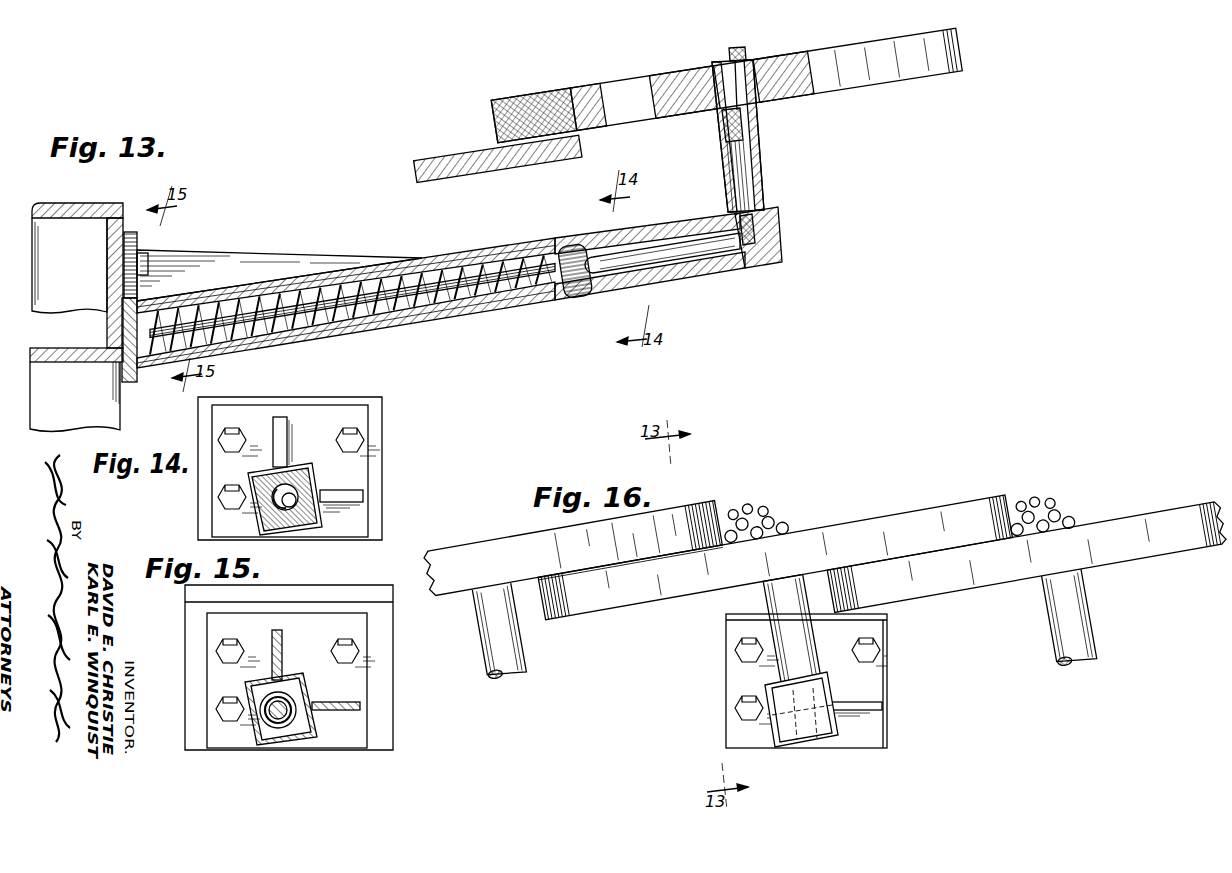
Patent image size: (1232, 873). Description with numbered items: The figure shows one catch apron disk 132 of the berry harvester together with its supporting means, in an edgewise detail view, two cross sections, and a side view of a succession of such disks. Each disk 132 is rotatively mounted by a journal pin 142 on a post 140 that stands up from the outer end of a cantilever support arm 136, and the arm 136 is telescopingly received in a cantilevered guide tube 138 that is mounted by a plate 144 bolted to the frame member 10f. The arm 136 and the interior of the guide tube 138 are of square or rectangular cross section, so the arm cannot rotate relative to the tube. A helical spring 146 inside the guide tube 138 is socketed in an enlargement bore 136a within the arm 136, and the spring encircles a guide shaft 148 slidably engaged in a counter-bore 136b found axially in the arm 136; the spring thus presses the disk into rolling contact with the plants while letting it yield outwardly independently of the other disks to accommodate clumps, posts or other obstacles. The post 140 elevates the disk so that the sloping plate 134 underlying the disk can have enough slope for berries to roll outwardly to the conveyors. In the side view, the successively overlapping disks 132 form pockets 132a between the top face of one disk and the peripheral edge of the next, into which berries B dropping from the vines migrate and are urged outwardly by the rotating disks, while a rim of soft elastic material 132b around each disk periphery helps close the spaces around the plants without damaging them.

In FIG. 13, the frame member 10f is at (110, 203).
In FIG. 14, the frame member 10f is at (382, 440).
In FIG. 15, the frame member 10f is at (376, 585).
In FIG. 13, the disk 132 is at (883, 77).
In FIG. 16, the disk 132 is at (717, 500).
In FIG. 16, the pocket 132a is at (1050, 505).
In FIG. 13, the soft and elastic material 132b is at (493, 110).
In FIG. 13, the sloping plate 134 is at (421, 160).
In FIG. 13, the cantilever support arm 136 is at (685, 277).
In FIG. 14, the cantilever support arm 136 is at (255, 525).
In FIG. 15, the cantilever support arm 136 is at (281, 709).
In FIG. 16, the cantilever support arm 136 is at (783, 725).
In FIG. 13, the enlargement bore 136a is at (536, 298).
In FIG. 13, the counter-bore 136b is at (640, 260).
In FIG. 13, the guide tube 138 is at (285, 282).
In FIG. 14, the guide tube 138 is at (290, 470).
In FIG. 15, the guide tube 138 is at (298, 675).
In FIG. 13, the post 140 is at (764, 174).
In FIG. 16, the post 140 is at (780, 627).
In FIG. 13, the journal pin 142 is at (738, 63).
In FIG. 13, the plate 144 is at (158, 268).
In FIG. 14, the plate 144 is at (296, 471).
In FIG. 15, the plate 144 is at (291, 680).
In FIG. 16, the plate 144 is at (872, 687).
In FIG. 13, the helical spring 146 is at (330, 320).
In FIG. 14, the helical spring 146 is at (318, 482).
In FIG. 15, the helical spring 146 is at (310, 700).
In FIG. 16, the helical spring 146 is at (857, 709).
In FIG. 13, the guide shaft 148 is at (583, 287).
In FIG. 14, the guide shaft 148 is at (290, 507).
In FIG. 15, the guide shaft 148 is at (286, 740).
In FIG. 16, the berries B is at (745, 512).